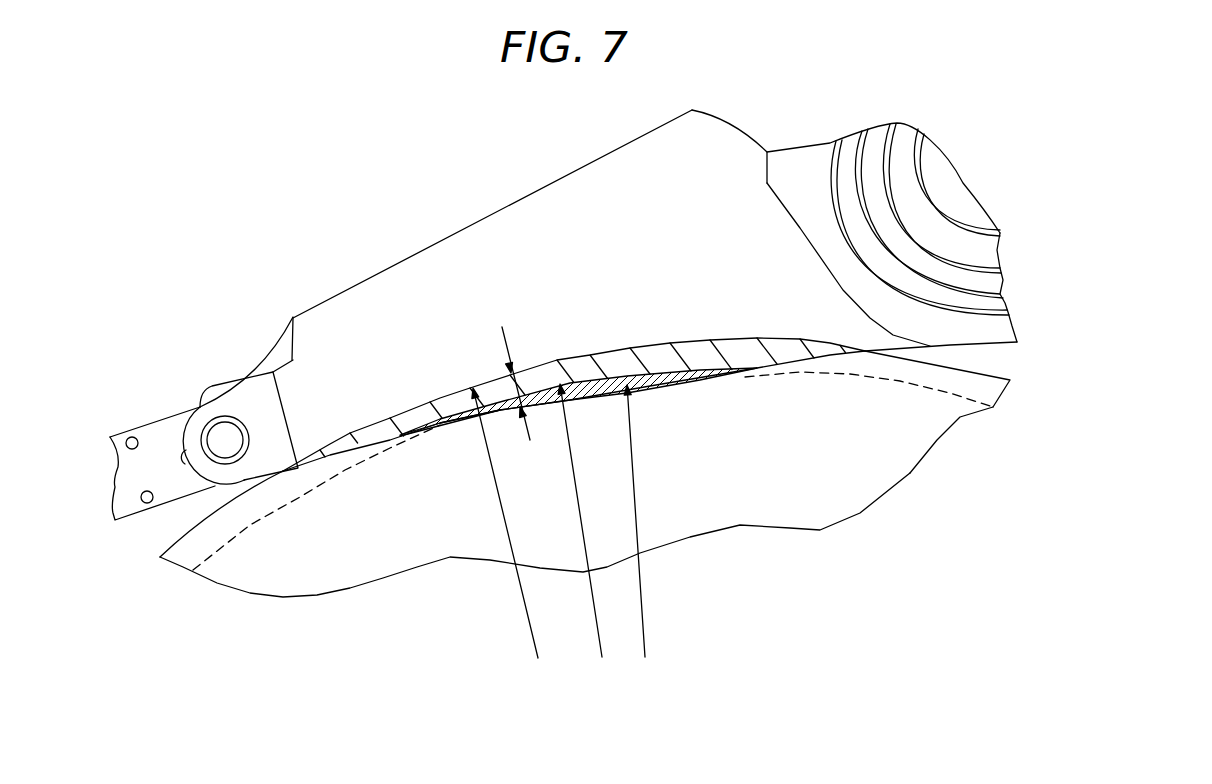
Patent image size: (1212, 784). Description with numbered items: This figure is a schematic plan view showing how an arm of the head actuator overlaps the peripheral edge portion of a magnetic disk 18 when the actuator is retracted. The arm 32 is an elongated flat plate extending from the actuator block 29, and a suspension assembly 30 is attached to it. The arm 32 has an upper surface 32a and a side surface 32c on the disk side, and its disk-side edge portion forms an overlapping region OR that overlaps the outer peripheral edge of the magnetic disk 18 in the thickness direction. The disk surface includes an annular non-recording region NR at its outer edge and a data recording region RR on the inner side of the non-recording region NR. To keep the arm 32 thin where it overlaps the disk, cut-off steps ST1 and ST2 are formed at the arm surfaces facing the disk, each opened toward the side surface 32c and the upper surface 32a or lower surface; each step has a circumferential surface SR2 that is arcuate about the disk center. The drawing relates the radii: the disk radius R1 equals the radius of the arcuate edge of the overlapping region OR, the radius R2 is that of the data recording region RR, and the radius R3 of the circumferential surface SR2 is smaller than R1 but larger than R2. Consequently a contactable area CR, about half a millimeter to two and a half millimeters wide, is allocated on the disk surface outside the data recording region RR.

The magnetic disk 18 is at (591, 469).
The actuator block 29 is at (805, 168).
The suspension assembly 30 is at (152, 451).
The arm 32 is at (608, 281).
The upper surface 32a is at (420, 273).
The side surface 32c is at (574, 376).
The contactable area CR is at (522, 378).
The overlapping region OR is at (612, 343).
The step ST1 is at (580, 404).
The step ST2 is at (660, 383).
The circumferential surface SR2 is at (447, 425).
The data recording region RR is at (955, 401).
The non-recording region NR is at (991, 398).
The disk radius R1 is at (528, 622).
The radius of the data recording region R2 is at (652, 615).
The radius of the circumferential surface R3 is at (592, 610).